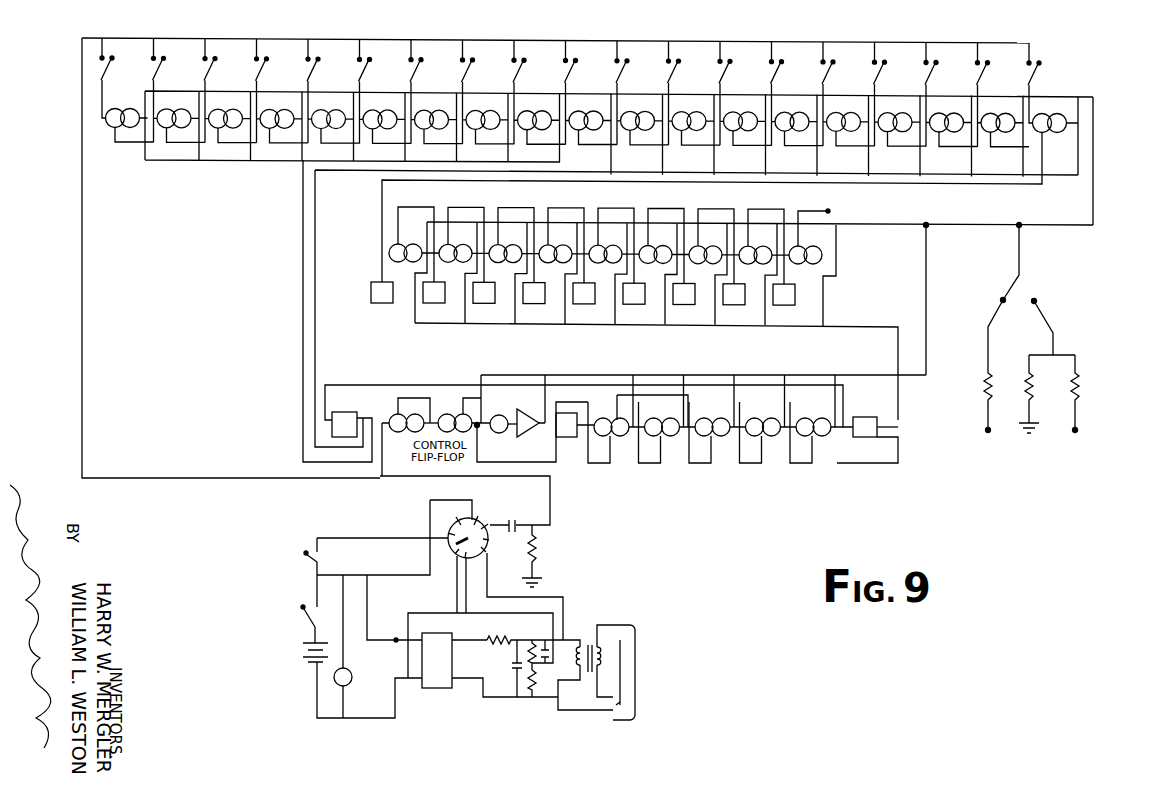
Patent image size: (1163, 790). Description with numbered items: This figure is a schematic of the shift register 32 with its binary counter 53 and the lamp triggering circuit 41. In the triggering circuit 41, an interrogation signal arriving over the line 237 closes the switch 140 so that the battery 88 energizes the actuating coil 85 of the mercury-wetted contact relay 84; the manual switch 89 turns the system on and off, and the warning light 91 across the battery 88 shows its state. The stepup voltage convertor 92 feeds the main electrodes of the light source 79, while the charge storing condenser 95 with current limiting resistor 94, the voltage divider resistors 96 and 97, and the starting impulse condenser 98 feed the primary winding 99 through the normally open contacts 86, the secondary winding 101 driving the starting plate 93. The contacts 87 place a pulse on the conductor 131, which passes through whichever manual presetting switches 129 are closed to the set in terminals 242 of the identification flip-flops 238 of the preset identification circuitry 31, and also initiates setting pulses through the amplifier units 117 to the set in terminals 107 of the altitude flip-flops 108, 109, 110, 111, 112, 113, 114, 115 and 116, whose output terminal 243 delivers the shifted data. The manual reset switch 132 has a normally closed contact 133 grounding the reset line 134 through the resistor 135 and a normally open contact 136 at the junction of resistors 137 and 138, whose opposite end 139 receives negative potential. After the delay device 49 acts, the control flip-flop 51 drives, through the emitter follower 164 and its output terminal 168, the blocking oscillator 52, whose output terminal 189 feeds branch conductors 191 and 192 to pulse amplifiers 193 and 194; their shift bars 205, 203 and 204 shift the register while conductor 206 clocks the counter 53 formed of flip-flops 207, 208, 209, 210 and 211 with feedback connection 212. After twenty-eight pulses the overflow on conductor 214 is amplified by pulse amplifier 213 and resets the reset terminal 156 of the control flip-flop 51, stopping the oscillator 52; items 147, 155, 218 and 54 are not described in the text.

The preset identification circuitry 31 is at (229, 52).
The manual presetting switches 129 is at (100, 72).
The set in terminal 242 is at (102, 108).
The identification flip-flops 238 is at (494, 109).
The shift register 32 is at (260, 245).
The branched output conductor 203 is at (303, 317).
The branched output conductor 204 is at (317, 330).
The set in terminal 107 is at (382, 260).
The shifting flip-flop 108 is at (403, 245).
The shifting flip-flop 109 is at (452, 245).
The shifting flip-flop 110 is at (502, 245).
The shifting flip-flop 111 is at (554, 245).
The shifting flip-flop 112 is at (606, 245).
The shifting flip-flop 113 is at (656, 245).
The shifting flip-flop 114 is at (706, 245).
The shifting flip-flop 115 is at (757, 245).
The delay flip-flop 116 is at (822, 248).
The amplifier unit 117 is at (370, 305).
The output terminal 243 is at (846, 220).
The reset line 134 is at (966, 224).
The manual reset switch 132 is at (1022, 292).
The normally closed contact 133 is at (1004, 296).
The resistor 135 is at (986, 408).
The normally open contact 136 is at (1038, 300).
The resistor 137 is at (1026, 373).
The resistor 138 is at (1079, 372).
The opposite end 139 is at (1078, 433).
The branch output conductor 205 is at (900, 408).
The branch output conductor 206 is at (900, 453).
The pulse amplifier 193 is at (878, 410).
The branch output conductor 192 is at (358, 385).
The pulse amplifier 194 is at (344, 412).
The delay device 49 is at (398, 414).
The control flip-flop 51 is at (440, 414).
The winding 147 is at (418, 398).
The winding 155 is at (466, 398).
The emitter follower 164 is at (497, 414).
The variable frequency blocking oscillator 52 is at (530, 416).
The output terminal 168 is at (524, 412).
The reset terminal 156 is at (479, 429).
The pulse source output terminal 189 is at (562, 375).
The branch output conductor 191 is at (592, 386).
The flip-flop 207 is at (614, 398).
The feedback connection 212 is at (658, 395).
The conductor 218 is at (826, 374).
The pulse amplifier 213 is at (566, 447).
The conductor 214 is at (592, 452).
The flip-flop 208 is at (664, 440).
The flip-flop 209 is at (718, 444).
The flip-flop 210 is at (768, 444).
The flip-flop 211 is at (810, 444).
The pulse amplifier output 54 is at (846, 462).
The binary counter 53 is at (698, 482).
The conductor 131 is at (550, 508).
The mercury-wetted contact relay 84 is at (494, 516).
The normally open contacts 87 is at (478, 517).
The actuating coil 85 is at (452, 560).
The normally open contacts 86 is at (484, 557).
The line 237 is at (362, 538).
The interrogation-signal switch contacts 140 is at (336, 558).
The manual switch 89 is at (300, 616).
The battery 88 is at (303, 660).
The warning light 91 is at (352, 684).
The D.-C. to D.-C. stepup voltage convertor 92 is at (436, 690).
The current limiting resistor 94 is at (502, 645).
The charge storing condenser 95 is at (516, 685).
The resistor 96 is at (534, 690).
The resistor 97 is at (534, 645).
The starting impulse supplying condenser 98 is at (548, 648).
The secondary winding 101 is at (596, 644).
The primary winding 99 is at (578, 672).
The light source 79 is at (634, 660).
The starting electrode or plate 93 is at (628, 690).
The lamp triggering circuit 41 is at (483, 760).